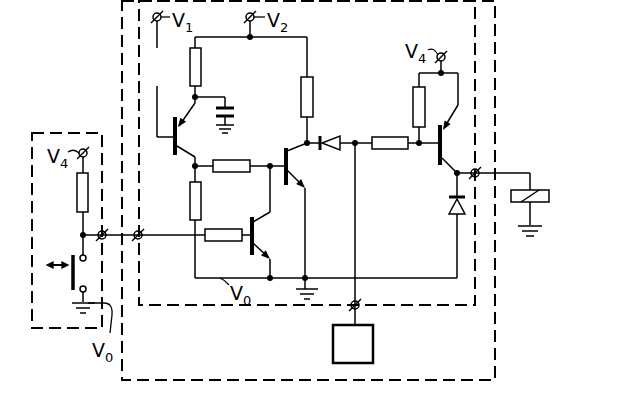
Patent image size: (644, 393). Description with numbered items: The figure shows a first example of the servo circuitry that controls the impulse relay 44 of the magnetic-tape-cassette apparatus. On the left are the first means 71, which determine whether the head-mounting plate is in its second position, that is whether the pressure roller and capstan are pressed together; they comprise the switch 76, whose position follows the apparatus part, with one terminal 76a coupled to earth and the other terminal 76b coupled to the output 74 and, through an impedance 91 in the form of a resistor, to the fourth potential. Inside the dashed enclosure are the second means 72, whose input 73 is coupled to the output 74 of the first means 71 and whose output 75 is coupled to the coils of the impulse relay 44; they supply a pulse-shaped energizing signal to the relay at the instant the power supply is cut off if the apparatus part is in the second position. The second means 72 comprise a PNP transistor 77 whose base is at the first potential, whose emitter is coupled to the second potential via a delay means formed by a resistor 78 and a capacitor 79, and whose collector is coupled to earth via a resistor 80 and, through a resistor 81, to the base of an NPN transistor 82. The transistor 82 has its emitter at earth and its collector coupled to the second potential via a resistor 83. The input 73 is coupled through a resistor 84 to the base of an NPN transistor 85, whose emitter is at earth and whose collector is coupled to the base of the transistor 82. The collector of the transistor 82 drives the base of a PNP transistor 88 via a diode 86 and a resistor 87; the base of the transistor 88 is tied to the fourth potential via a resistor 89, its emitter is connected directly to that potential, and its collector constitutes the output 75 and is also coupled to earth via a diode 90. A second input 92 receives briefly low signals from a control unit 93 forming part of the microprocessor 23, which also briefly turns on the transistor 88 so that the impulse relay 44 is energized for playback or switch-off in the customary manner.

The microprocessor 23 is at (497, 83).
The second means 72 is at (478, 20).
The first means 71 is at (69, 127).
The input 73 is at (141, 240).
The output 74 is at (104, 230).
The output 75 is at (477, 178).
The switch 76 is at (70, 285).
The terminal 76a is at (79, 292).
The terminal 76b is at (80, 254).
The PNP transistor 77 is at (174, 140).
The resistor 78 is at (204, 63).
The capacitor 79 is at (233, 104).
The resistor 80 is at (190, 192).
The resistor 81 is at (243, 160).
The NPN transistor 82 is at (287, 146).
The resistor 83 is at (313, 86).
The resistor 84 is at (228, 242).
The NPN transistor 85 is at (251, 222).
The diode 86 is at (333, 133).
The resistor 87 is at (390, 150).
The PNP transistor 88 is at (438, 158).
The resistor 89 is at (413, 108).
The diode 90 is at (453, 206).
The impedance 91 is at (77, 192).
The second input 92 is at (359, 309).
The control unit 93 is at (374, 345).
The impulse relay 44 is at (545, 190).